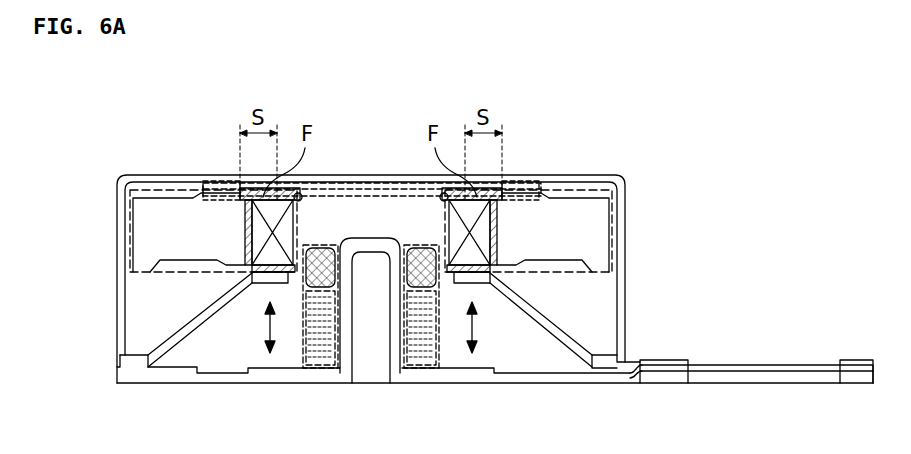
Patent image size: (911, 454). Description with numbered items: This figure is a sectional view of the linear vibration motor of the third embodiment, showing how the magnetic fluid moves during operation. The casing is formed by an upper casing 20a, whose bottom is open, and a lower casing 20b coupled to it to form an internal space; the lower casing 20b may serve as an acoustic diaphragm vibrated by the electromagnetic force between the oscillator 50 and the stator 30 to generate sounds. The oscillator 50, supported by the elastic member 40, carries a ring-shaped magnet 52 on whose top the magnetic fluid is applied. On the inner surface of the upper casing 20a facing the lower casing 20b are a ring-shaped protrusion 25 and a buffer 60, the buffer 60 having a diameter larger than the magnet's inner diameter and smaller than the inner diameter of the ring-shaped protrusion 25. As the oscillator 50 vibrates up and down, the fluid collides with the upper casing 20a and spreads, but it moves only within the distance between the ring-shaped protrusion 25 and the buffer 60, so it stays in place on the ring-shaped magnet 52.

The upper casing 20a is at (625, 280).
The lower casing 20b is at (772, 383).
The ring-shaped protrusion 25 is at (228, 181).
The stator 30 is at (323, 368).
The elastic member 40 is at (190, 313).
The oscillator 50 is at (131, 211).
The ring-shaped magnet 52 is at (249, 247).
The buffer 60 is at (374, 184).